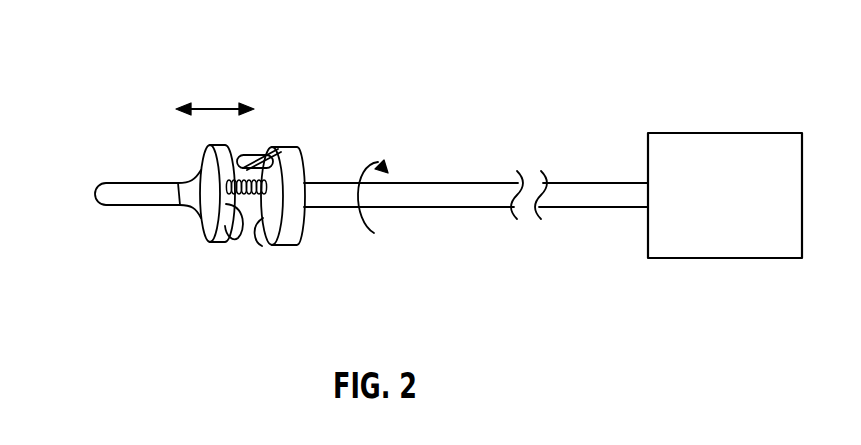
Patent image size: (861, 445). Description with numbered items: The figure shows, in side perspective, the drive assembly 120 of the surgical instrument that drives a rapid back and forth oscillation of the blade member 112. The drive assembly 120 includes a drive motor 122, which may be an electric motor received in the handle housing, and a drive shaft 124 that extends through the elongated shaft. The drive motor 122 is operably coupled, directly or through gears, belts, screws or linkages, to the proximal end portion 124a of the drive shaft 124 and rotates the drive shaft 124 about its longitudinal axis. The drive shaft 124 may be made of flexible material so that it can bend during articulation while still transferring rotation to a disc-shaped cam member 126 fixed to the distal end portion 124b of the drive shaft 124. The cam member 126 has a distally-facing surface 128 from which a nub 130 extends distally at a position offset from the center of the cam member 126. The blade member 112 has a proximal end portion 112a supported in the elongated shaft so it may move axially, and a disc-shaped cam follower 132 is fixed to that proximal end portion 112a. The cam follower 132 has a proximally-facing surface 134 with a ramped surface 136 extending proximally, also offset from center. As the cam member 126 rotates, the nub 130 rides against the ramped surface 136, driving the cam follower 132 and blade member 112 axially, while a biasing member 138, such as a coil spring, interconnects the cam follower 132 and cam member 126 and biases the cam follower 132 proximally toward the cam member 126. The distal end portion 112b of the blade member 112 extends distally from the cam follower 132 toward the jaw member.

The blade member 112 is at (155, 94).
The proximal end portion 112a is at (178, 212).
The distal end portion 112b is at (110, 200).
The drive assembly 120 is at (530, 70).
The drive motor 122 is at (725, 133).
The drive shaft 124 is at (432, 155).
The proximal end portion 124a is at (620, 197).
The distal end portion 124b is at (418, 200).
The cam member 126 is at (292, 246).
The distally-facing surface 128 is at (262, 240).
The nub 130 is at (259, 150).
The cam follower 132 is at (213, 244).
The proximally-facing surface 134 is at (203, 143).
The ramped surface 136 is at (238, 240).
The biasing member 138 is at (263, 156).